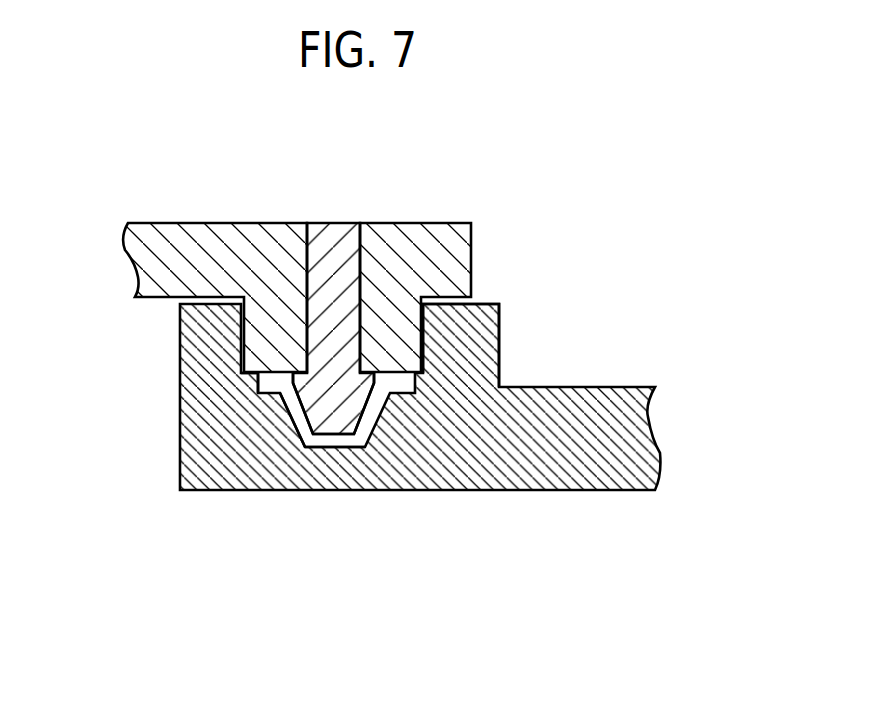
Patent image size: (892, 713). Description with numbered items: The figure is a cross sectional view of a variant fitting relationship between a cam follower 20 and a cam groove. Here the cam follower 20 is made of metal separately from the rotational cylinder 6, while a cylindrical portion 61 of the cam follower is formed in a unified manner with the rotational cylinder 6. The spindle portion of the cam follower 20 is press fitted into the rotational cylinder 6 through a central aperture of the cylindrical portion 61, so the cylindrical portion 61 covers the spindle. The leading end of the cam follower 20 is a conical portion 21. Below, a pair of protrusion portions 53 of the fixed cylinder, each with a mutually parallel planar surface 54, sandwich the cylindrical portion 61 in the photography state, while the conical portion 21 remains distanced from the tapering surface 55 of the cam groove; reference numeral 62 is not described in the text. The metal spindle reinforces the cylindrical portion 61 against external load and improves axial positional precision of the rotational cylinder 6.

The rotational cylinder 6 is at (140, 258).
The cam follower 20 is at (330, 240).
The conical portion 21 is at (292, 400).
The protrusion portions 53 is at (196, 356).
The planar surface 54 is at (265, 358).
The tapering surface 55 is at (372, 428).
The cylindrical portion of the cam follower 61 is at (448, 391).
The lip portion 62 is at (425, 322).